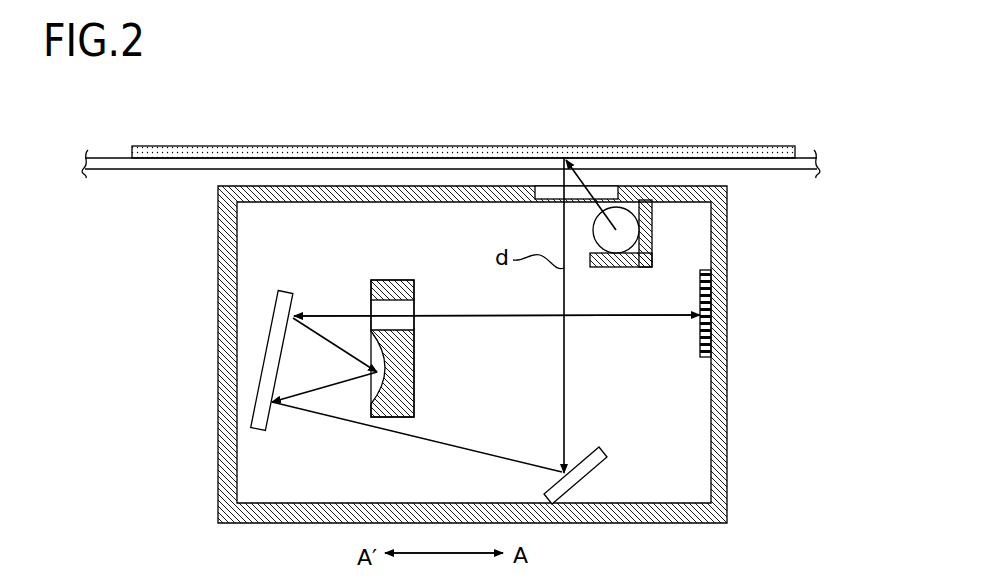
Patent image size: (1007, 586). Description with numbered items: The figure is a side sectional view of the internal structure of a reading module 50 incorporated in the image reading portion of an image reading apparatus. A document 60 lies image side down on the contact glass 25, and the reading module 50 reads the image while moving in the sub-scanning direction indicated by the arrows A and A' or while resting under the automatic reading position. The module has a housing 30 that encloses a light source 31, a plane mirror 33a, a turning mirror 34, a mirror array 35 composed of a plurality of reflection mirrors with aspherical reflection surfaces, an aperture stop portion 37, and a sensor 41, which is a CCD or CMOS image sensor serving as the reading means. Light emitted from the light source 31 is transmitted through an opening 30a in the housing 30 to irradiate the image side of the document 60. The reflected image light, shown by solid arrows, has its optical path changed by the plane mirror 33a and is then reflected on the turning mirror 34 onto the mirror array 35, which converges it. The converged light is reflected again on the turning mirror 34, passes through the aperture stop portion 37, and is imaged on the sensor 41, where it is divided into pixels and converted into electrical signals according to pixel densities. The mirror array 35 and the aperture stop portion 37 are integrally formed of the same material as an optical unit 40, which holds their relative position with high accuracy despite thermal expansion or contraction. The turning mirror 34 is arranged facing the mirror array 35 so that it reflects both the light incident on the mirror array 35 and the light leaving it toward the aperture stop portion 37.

The contact glass 25 is at (111, 157).
The document 60 is at (737, 152).
The housing 30 is at (727, 442).
The opening 30a is at (552, 190).
The light source 31 is at (617, 237).
The plane mirror 33a is at (572, 480).
The turning mirror 34 is at (265, 370).
The mirror array 35 is at (373, 393).
The aperture stop portion 37 is at (410, 322).
The optical unit 40 is at (385, 280).
The sensor 41 is at (700, 348).
The reading module 50 is at (760, 277).